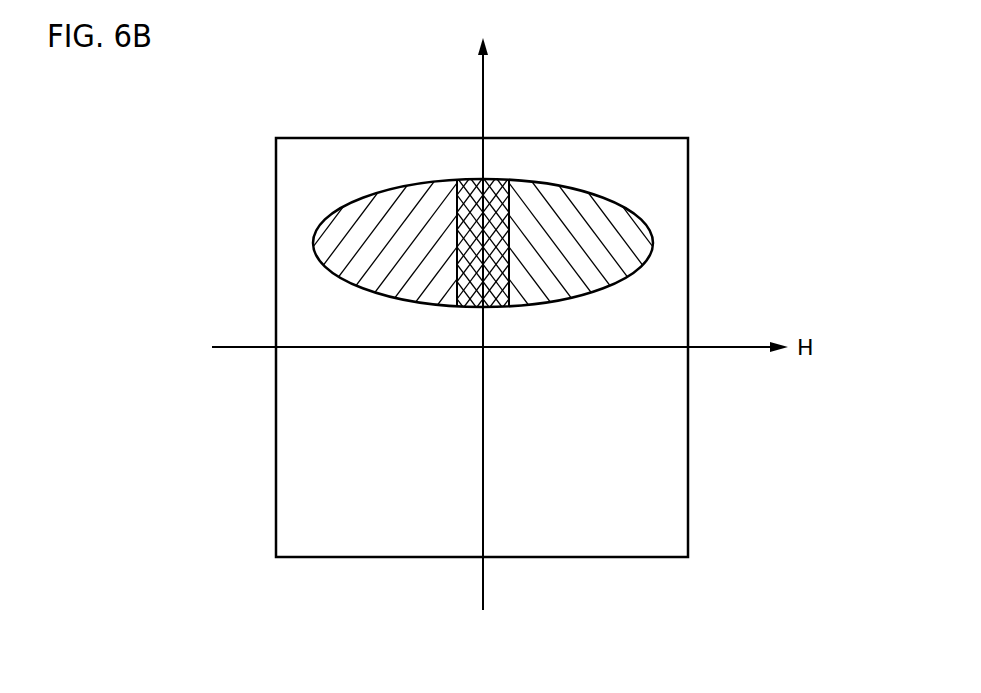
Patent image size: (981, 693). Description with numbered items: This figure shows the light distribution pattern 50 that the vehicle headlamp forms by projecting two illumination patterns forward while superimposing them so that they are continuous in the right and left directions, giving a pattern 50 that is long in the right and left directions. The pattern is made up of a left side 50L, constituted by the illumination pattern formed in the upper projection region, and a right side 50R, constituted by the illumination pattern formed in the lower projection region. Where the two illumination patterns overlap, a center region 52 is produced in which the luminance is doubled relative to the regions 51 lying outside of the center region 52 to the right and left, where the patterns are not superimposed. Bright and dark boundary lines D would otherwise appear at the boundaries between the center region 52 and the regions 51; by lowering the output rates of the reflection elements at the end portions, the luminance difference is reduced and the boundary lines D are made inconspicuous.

The light distribution pattern 50 is at (608, 188).
The left side of the light distribution pattern 50L is at (330, 273).
The right side of the light distribution pattern 50R is at (656, 248).
The regions outside of the center region 51 is at (501, 298).
The center region 52 is at (497, 270).
The bright and dark boundary lines D is at (457, 208).